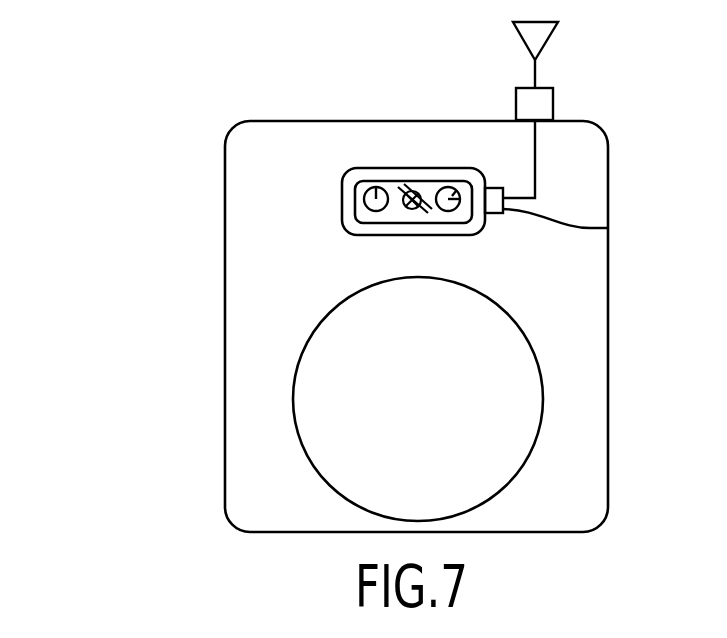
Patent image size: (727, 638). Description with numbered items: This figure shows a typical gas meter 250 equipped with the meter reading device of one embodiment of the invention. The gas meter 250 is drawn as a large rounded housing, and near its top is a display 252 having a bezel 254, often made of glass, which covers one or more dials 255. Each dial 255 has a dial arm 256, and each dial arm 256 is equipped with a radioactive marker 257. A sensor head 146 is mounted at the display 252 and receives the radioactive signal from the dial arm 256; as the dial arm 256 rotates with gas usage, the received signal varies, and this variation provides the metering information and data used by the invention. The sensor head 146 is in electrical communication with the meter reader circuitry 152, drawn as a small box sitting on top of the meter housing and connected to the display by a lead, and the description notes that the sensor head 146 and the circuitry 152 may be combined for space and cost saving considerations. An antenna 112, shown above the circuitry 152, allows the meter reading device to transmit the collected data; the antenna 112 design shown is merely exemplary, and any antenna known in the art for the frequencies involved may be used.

The antenna 112 is at (550, 40).
The meter reader circuitry 152 is at (553, 106).
The sensor head 146 is at (608, 228).
The gas meter 250 is at (213, 413).
The display 252 is at (342, 184).
The bezel 254 is at (355, 207).
The dial 255 is at (374, 190).
The dial arm 256 is at (456, 191).
The radioactive marker 257 is at (455, 191).